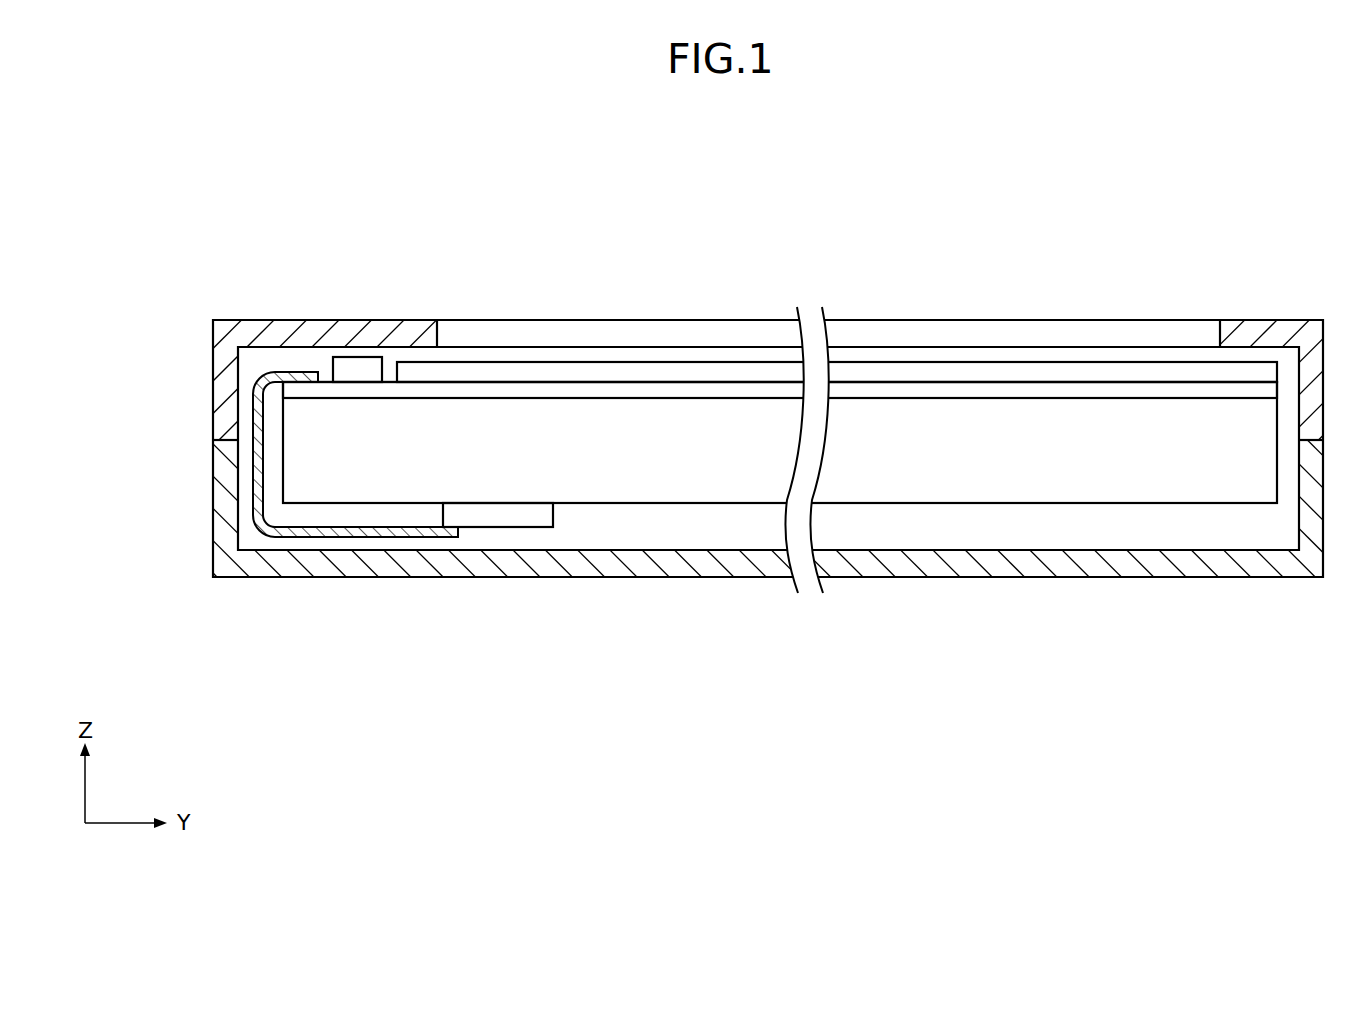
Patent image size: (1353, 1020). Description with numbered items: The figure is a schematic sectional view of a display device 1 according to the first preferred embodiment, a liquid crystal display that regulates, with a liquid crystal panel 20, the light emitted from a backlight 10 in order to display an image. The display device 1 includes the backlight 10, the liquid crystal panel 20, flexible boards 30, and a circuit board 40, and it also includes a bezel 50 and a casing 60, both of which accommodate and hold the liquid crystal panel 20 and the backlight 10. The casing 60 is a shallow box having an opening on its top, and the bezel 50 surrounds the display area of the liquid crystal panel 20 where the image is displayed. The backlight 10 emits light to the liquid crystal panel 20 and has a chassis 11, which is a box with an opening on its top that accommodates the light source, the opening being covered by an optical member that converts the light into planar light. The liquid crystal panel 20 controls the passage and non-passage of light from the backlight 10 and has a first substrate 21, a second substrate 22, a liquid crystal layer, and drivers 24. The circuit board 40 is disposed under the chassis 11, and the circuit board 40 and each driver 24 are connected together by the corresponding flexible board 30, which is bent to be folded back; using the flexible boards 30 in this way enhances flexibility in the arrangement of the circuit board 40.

The display device 1 is at (405, 131).
The backlight 10 is at (780, 510).
The chassis 11 is at (742, 473).
The liquid crystal panel 20 is at (780, 317).
The first substrate 21 is at (624, 390).
The second substrate 22 is at (569, 373).
The driver 24 is at (357, 370).
The flexible board 30 is at (255, 372).
The circuit board 40 is at (498, 513).
The bezel 50 is at (1248, 333).
The casing 60 is at (1066, 560).